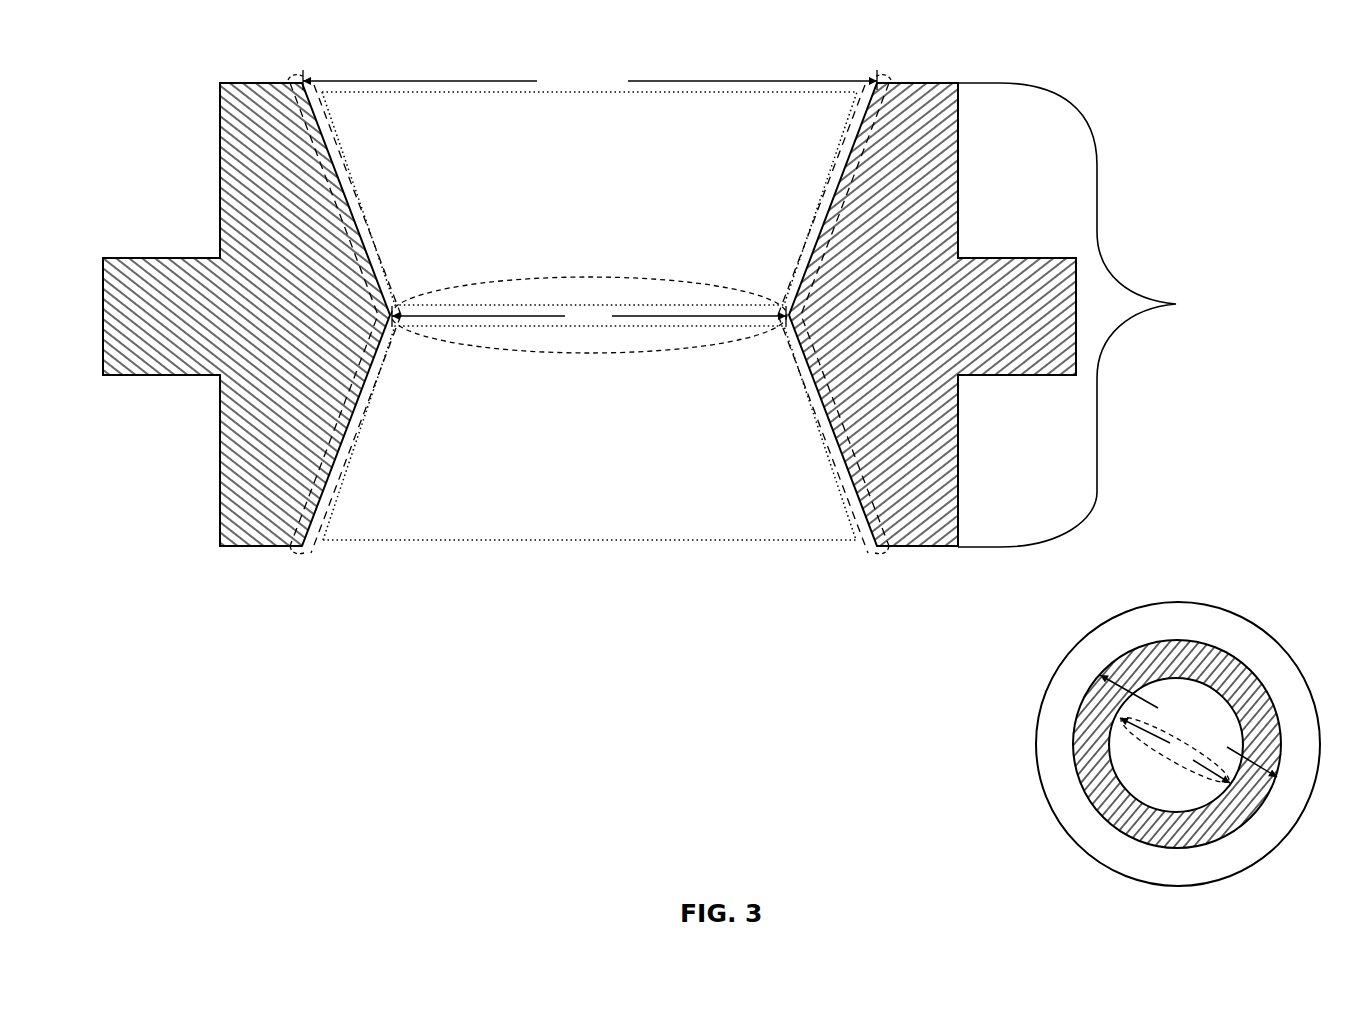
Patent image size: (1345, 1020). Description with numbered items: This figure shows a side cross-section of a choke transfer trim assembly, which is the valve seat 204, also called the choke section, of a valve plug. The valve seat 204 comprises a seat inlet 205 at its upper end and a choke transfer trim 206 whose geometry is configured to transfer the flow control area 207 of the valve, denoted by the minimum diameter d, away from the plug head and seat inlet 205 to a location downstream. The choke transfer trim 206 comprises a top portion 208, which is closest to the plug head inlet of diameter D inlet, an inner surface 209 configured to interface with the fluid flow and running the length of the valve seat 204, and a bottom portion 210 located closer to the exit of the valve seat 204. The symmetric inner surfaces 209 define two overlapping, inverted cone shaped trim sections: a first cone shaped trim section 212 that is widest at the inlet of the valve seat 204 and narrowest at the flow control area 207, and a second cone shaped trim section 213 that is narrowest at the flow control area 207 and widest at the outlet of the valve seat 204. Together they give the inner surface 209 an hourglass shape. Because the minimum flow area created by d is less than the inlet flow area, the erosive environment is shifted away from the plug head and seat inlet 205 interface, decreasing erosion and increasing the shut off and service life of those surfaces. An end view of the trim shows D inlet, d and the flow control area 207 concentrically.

The valve seat 204 is at (1101, 315).
The seat inlet 205 is at (923, 83).
The choke transfer trim 206 is at (983, 327).
The flow control area 207 is at (668, 287).
The top portion 208 is at (842, 177).
The inner surface 209 is at (370, 400).
The bottom portion 210 is at (868, 522).
The first cone shaped trim section 212 is at (664, 104).
The second cone shaped trim section 213 is at (613, 535).